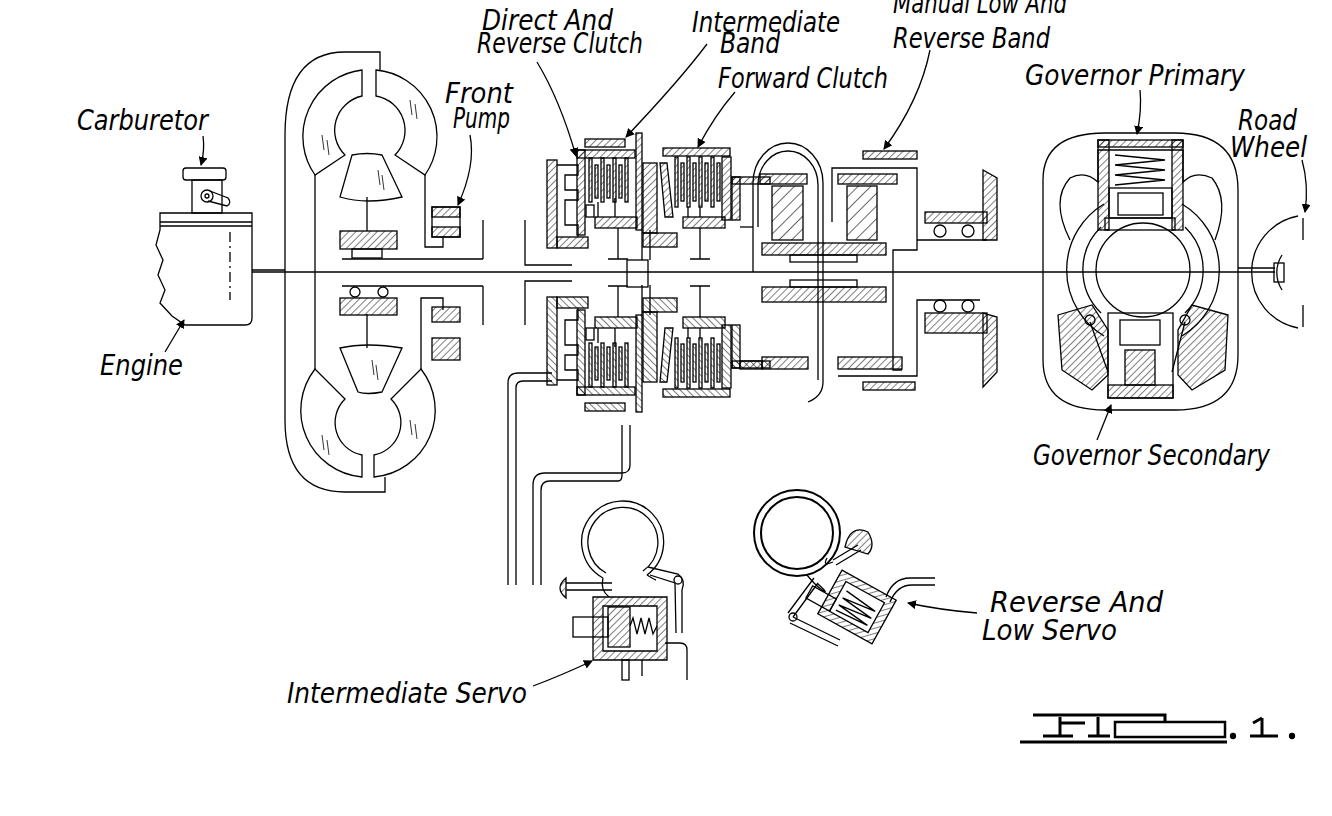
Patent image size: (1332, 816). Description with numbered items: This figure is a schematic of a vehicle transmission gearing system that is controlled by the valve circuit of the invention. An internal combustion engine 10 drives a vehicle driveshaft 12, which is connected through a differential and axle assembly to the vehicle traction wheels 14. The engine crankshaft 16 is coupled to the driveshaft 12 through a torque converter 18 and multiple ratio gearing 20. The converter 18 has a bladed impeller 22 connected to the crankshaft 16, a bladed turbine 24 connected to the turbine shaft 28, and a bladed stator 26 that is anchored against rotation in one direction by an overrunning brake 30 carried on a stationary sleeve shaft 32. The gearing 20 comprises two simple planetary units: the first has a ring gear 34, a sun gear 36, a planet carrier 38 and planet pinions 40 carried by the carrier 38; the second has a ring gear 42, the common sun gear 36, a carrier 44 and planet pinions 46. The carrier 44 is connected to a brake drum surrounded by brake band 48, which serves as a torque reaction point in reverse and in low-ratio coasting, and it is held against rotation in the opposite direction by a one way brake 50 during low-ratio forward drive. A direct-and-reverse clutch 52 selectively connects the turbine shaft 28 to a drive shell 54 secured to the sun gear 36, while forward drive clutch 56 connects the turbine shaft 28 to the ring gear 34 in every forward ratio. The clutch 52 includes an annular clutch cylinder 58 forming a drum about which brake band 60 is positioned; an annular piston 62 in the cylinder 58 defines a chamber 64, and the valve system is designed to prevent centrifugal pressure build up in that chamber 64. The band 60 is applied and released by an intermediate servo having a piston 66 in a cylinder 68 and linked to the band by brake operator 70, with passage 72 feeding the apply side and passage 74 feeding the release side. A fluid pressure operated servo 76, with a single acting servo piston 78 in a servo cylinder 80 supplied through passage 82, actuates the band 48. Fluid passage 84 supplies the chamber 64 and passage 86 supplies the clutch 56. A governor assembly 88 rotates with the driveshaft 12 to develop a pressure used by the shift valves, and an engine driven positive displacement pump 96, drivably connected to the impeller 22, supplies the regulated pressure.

The internal combustion engine 10 is at (160, 257).
The vehicle driveshaft 12 is at (1243, 262).
The vehicle traction wheels 14 is at (1300, 323).
The engine crankshaft 16 is at (263, 270).
The torque converter 18 is at (364, 248).
The multiple ratio gearing 20 is at (812, 155).
The bladed impeller 22 is at (408, 95).
The bladed turbine 24 is at (320, 100).
The bladed stator 26 is at (367, 153).
The turbine shaft 28 is at (506, 275).
The overrunning brake 30 is at (340, 316).
The stationary sleeve shaft 32 is at (418, 372).
The ring gear 34 is at (789, 182).
The sun gear 36 is at (778, 302).
The planet carrier 38 is at (770, 178).
The planet pinions 40 is at (762, 250).
The ring gear 42 is at (912, 150).
The carrier 44 is at (880, 185).
The planet pinions 46 is at (877, 230).
The brake band 48 is at (881, 393).
The one way brake 50 is at (990, 235).
The direct-and-reverse clutch 52 is at (625, 180).
The drive shell 54 is at (706, 150).
The forward drive clutch 56 is at (707, 402).
The annular clutch cylinder 58 is at (556, 160).
The brake band 60 is at (608, 137).
The annular piston 62 is at (562, 388).
The chamber 64 is at (553, 207).
The piston 66 is at (640, 661).
The cylinder 68 is at (660, 662).
The brake operator 70 is at (686, 602).
The passage 72 is at (620, 675).
The passage 74 is at (689, 672).
The fluid pressure operated servo 76 is at (888, 622).
The servo piston 78 is at (866, 635).
The servo cylinder 80 is at (881, 588).
The passage 82 is at (932, 578).
The fluid passage 84 is at (508, 501).
The passage 86 is at (533, 537).
The governor assembly 88 is at (1087, 387).
The engine driven positive displacement pump 96 is at (452, 362).